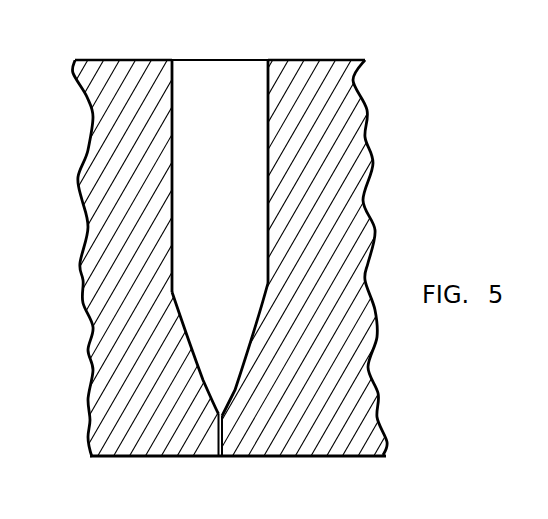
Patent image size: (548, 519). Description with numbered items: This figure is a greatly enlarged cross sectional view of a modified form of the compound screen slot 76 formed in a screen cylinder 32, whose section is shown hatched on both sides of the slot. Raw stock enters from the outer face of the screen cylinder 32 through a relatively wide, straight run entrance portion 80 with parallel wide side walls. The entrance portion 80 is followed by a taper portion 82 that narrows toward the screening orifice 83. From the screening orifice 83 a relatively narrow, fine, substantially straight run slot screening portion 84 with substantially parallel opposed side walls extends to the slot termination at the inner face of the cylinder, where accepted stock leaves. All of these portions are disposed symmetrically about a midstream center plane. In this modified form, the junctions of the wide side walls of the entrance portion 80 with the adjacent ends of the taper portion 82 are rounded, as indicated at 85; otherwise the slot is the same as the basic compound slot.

The screen cylinder 32 is at (320, 57).
The compound screen slot 76 is at (222, 53).
The entrance portion 80 is at (205, 73).
The taper portion 82 is at (192, 340).
The screening orifice 83 is at (219, 413).
The slot screening portion 84 is at (218, 446).
The rounded junction 85 is at (267, 288).